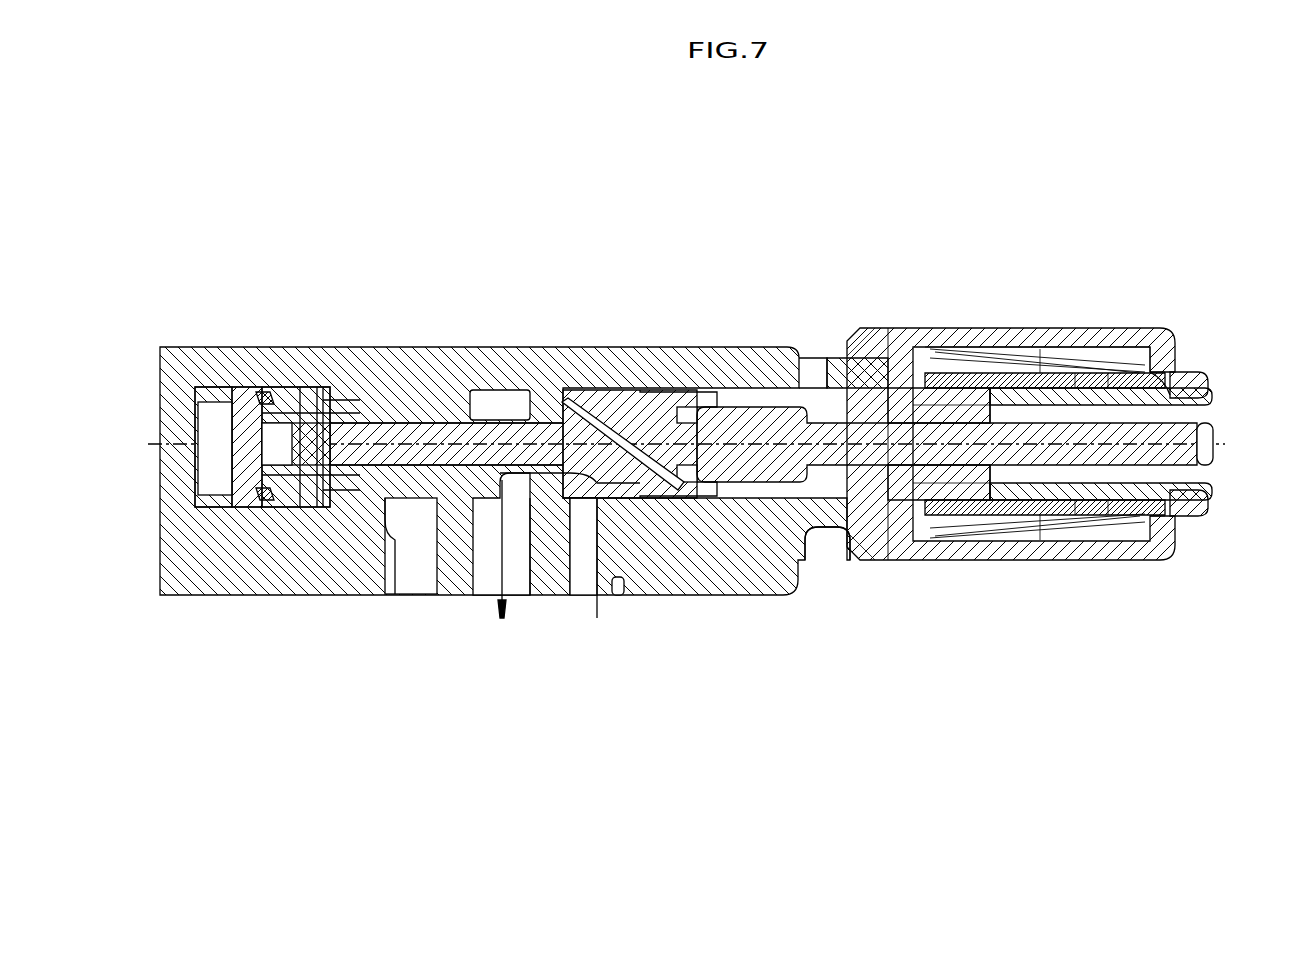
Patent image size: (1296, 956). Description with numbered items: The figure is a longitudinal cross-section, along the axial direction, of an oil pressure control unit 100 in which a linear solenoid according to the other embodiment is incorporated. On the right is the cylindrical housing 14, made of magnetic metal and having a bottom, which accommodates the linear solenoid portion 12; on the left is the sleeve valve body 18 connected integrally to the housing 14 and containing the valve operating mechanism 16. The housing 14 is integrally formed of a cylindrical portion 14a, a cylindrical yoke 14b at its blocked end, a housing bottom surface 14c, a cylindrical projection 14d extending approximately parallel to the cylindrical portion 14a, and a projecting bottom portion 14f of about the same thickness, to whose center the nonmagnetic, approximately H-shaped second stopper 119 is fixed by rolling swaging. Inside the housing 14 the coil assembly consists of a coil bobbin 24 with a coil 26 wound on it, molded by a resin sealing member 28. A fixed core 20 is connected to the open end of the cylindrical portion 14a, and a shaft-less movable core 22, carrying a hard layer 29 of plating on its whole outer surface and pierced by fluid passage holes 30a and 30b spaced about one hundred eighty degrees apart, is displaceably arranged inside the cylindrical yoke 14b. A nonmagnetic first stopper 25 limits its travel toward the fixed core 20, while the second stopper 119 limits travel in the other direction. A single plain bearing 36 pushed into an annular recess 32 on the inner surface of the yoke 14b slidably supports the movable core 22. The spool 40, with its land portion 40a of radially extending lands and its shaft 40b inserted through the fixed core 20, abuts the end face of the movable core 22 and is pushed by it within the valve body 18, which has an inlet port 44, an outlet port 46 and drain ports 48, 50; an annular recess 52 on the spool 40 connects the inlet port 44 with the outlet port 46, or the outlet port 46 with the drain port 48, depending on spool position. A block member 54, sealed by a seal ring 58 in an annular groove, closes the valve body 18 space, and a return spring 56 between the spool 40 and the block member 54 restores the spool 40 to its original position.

The oil pressure control unit 100 is at (1003, 172).
The linear solenoid portion 12 is at (1096, 343).
The housing 14 is at (953, 343).
The cylindrical portion 14a is at (930, 342).
The cylindrical yoke 14b is at (1096, 340).
The housing bottom surface 14c is at (1166, 343).
The cylindrical projection 14d is at (1198, 377).
The projecting bottom portion 14f is at (1210, 390).
The valve operating mechanism 16 is at (600, 385).
The valve body 18 is at (458, 347).
The fixed core 20 is at (940, 560).
The movable core 22 is at (1010, 560).
The coil bobbin 24 is at (1108, 560).
The first stopper 25 is at (902, 326).
The coil 26 is at (1075, 560).
The resin sealing member 28 is at (968, 560).
The hard layer 29 is at (1140, 560).
The fluid passage hole 30a is at (1210, 402).
The fluid passage hole 30b is at (1210, 486).
The annular recess 32 is at (1044, 560).
The plain bearing 36 is at (1030, 350).
The spool 40 is at (392, 395).
The land portion 40a is at (655, 597).
The shaft 40b is at (895, 560).
The inlet port 44 is at (607, 597).
The outlet port 46 is at (478, 597).
The drain port 48 is at (388, 597).
The drain port 50 is at (800, 356).
The annular recess 52 is at (470, 597).
The block member 54 is at (237, 597).
The return spring 56 is at (262, 398).
The seal ring 58 is at (258, 395).
The second stopper 119 is at (1214, 446).